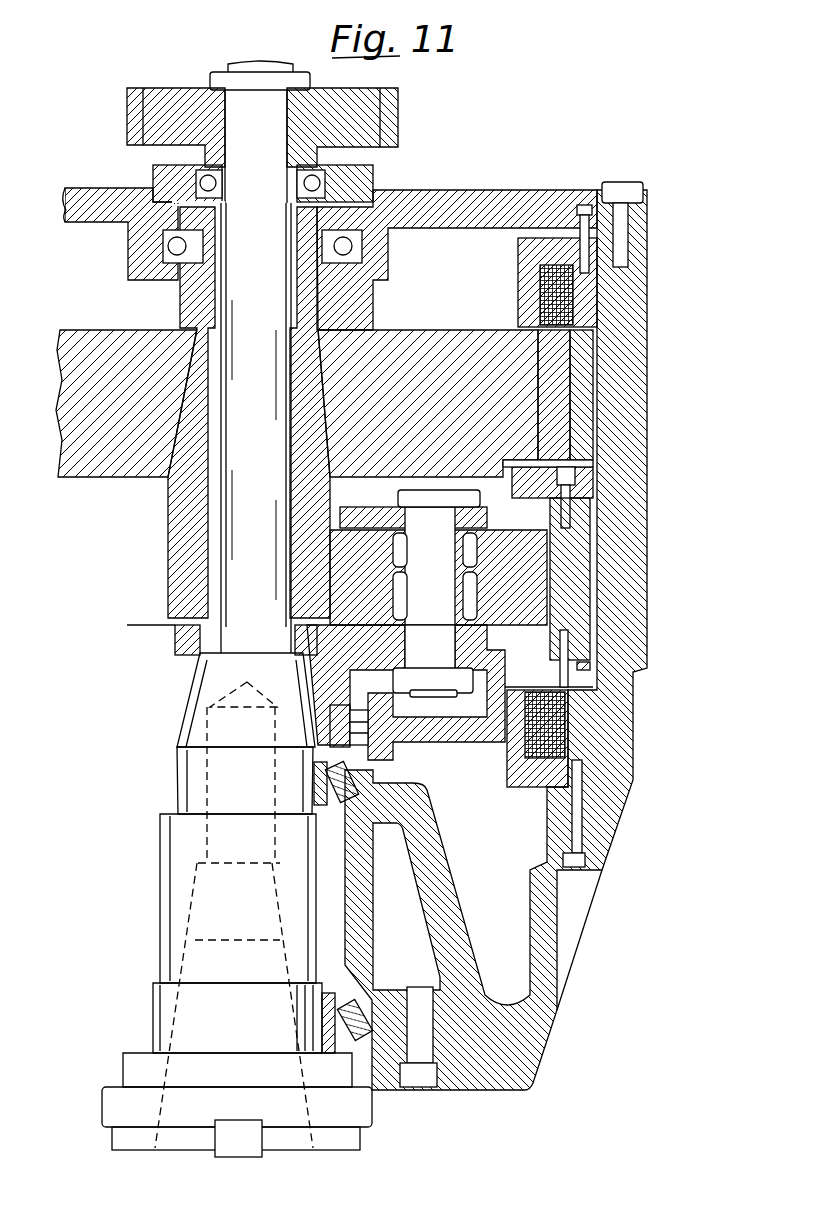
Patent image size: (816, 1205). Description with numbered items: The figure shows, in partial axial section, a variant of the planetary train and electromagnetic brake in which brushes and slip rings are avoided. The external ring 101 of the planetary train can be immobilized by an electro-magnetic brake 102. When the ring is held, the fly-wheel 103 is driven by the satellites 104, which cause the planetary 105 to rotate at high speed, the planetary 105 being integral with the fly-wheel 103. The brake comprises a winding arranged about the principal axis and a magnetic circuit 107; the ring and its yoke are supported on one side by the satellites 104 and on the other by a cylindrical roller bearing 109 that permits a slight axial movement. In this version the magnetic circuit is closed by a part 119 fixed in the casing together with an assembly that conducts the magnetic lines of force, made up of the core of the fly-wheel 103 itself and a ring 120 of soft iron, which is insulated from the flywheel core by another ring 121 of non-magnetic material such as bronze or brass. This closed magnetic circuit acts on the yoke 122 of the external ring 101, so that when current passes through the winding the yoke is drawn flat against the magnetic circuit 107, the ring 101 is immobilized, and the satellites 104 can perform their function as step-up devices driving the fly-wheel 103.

The external ring 101 is at (575, 608).
The electro-magnetic brake 102 is at (585, 678).
The fly-wheel 103 is at (445, 345).
The satellites 104 is at (525, 566).
The planetary 105 is at (183, 520).
The magnetic circuit 107 is at (517, 767).
The cylindrical roller bearing 109 is at (367, 727).
The part fixed in the casing 119 is at (532, 262).
The ring of soft iron 120 is at (585, 368).
The ring of non-magnetic material 121 is at (557, 417).
The yoke of the ring 122 is at (587, 480).